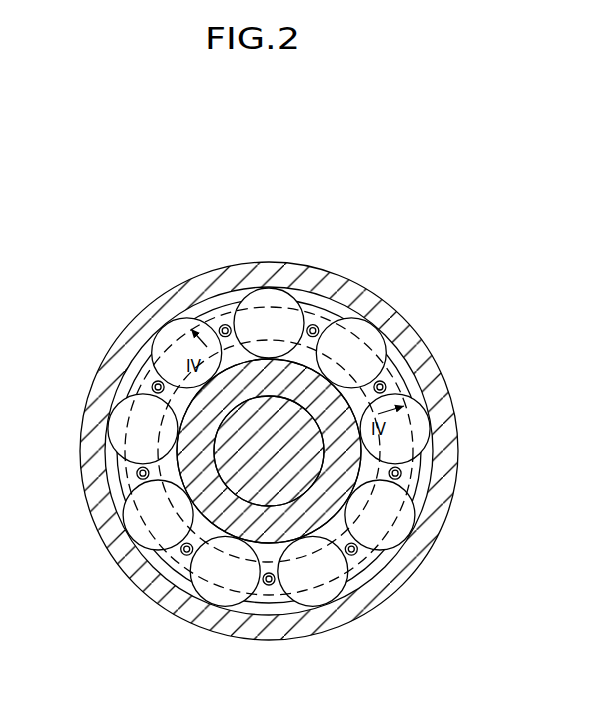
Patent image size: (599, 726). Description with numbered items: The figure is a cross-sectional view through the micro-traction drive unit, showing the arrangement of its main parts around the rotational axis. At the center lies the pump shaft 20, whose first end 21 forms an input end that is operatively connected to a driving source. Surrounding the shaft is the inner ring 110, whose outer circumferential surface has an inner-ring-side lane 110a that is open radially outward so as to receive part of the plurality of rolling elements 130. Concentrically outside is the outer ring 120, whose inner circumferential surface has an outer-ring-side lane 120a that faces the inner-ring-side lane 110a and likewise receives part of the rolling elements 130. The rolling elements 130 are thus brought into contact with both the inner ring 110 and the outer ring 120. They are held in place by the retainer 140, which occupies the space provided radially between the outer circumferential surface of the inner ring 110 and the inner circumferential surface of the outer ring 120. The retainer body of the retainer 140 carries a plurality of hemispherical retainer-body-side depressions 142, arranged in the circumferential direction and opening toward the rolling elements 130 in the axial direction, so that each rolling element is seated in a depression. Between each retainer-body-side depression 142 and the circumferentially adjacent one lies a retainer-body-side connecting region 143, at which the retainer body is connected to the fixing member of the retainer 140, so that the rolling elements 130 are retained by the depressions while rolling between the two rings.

The pump shaft 20 is at (268, 551).
The first end 21 is at (270, 470).
The inner ring 110 is at (359, 459).
The inner-ring-side lane 110a is at (318, 368).
The outer ring 120 is at (432, 357).
The outer-ring-side lane 120a is at (393, 363).
The rolling elements 130 is at (266, 300).
The retainer 140 is at (220, 305).
The retainer-body-side depressions 142 is at (282, 320).
The retainer-body-side connecting regions 143 is at (207, 327).